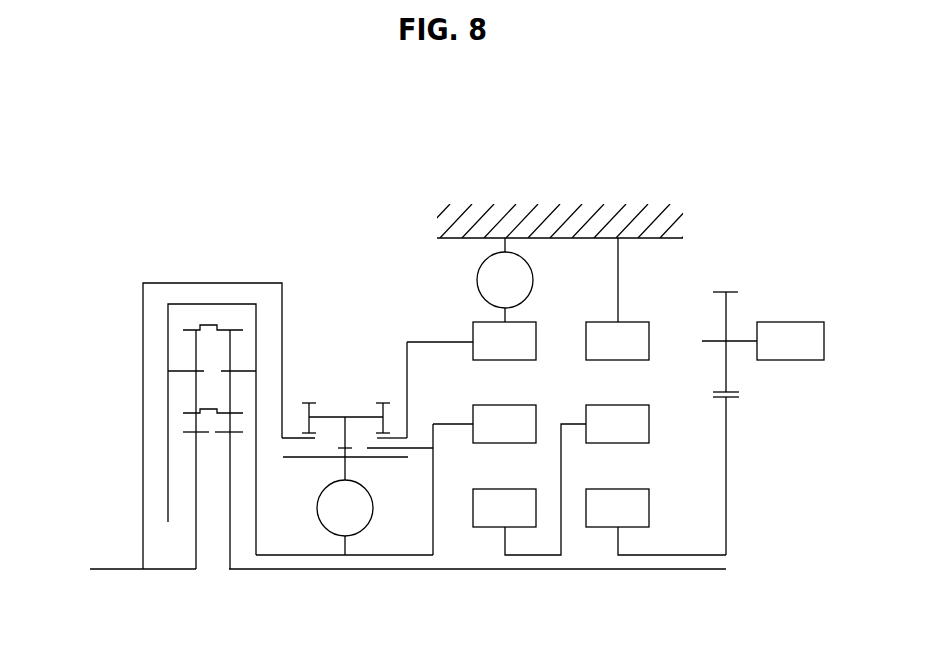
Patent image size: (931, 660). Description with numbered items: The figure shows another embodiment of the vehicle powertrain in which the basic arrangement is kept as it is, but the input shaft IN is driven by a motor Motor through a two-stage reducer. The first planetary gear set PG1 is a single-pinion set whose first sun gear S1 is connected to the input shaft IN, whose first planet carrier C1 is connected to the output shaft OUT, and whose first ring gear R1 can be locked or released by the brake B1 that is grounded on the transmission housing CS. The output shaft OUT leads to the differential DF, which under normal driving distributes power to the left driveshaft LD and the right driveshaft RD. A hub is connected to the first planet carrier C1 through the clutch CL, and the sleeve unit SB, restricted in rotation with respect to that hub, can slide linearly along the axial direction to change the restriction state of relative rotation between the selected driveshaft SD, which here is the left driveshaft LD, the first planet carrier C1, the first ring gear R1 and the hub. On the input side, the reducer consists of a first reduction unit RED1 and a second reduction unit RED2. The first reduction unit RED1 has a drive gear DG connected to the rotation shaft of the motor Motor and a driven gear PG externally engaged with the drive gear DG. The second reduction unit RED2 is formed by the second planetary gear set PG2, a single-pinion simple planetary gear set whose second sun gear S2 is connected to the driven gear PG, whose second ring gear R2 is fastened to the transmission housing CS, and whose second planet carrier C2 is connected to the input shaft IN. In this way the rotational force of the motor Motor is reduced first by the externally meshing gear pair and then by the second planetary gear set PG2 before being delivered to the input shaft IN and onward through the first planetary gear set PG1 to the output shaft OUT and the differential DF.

The differential DF is at (227, 298).
The sleeve unit SB is at (343, 394).
The clutch CL is at (345, 517).
The output shaft OUT is at (300, 556).
The transmission housing CS is at (495, 217).
The brake B1 is at (505, 280).
The first planetary gear set PG1 is at (514, 386).
The first ring gear R1 is at (504, 341).
The first planet carrier C1 is at (484, 424).
The first sun gear S1 is at (504, 508).
The second planetary gear set PG2 is at (666, 332).
The second reduction unit RED2 is at (666, 332).
The second ring gear R2 is at (617, 341).
The second planet carrier C2 is at (617, 424).
The second sun gear S2 is at (617, 508).
The input shaft IN is at (535, 557).
The right driveshaft RD is at (658, 570).
The first reduction unit RED1 is at (750, 377).
The drive gear DG is at (737, 291).
The driven gear PG is at (735, 398).
The motor Motor is at (763, 341).
The left driveshaft LD is at (385, 541).
The selected driveshaft SD is at (110, 568).